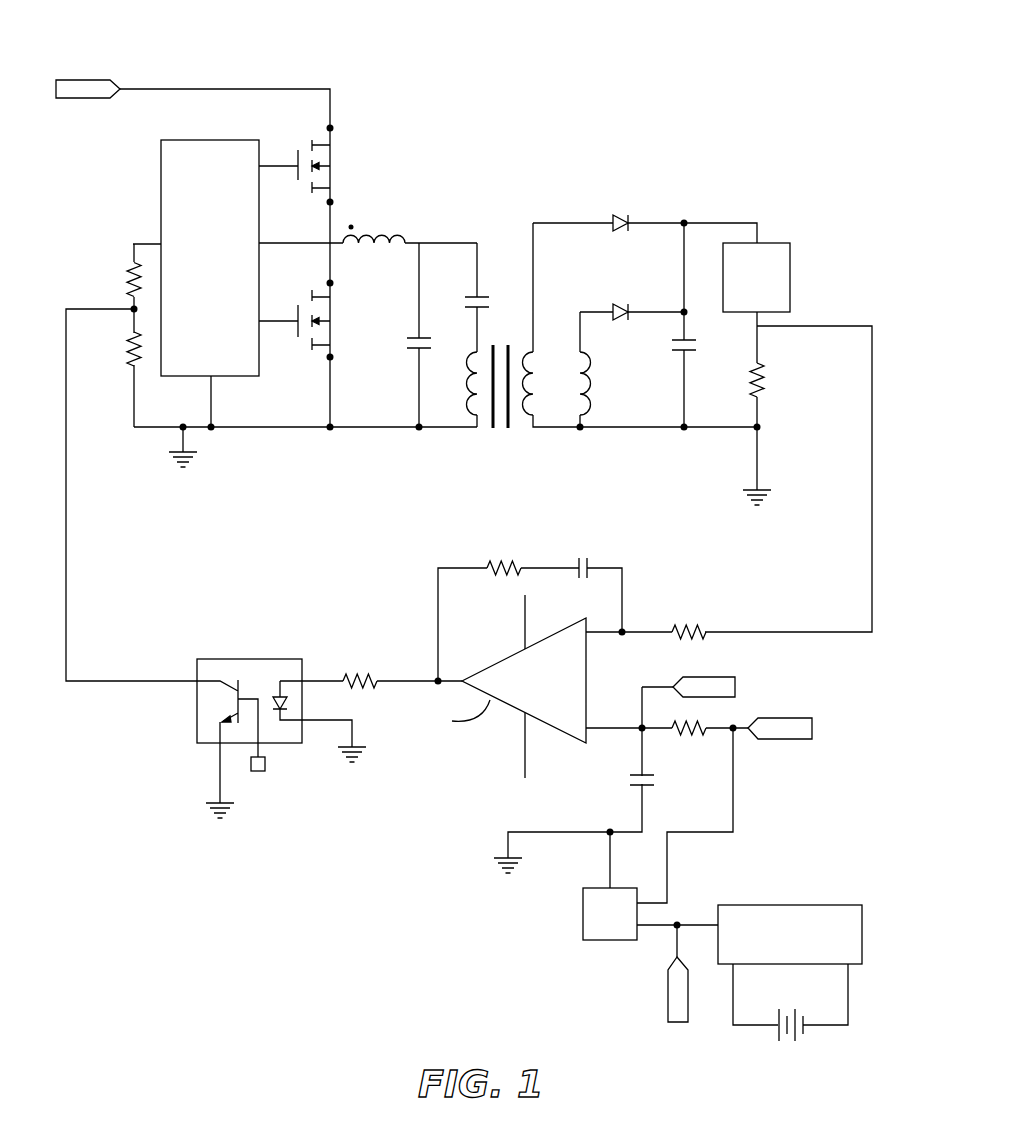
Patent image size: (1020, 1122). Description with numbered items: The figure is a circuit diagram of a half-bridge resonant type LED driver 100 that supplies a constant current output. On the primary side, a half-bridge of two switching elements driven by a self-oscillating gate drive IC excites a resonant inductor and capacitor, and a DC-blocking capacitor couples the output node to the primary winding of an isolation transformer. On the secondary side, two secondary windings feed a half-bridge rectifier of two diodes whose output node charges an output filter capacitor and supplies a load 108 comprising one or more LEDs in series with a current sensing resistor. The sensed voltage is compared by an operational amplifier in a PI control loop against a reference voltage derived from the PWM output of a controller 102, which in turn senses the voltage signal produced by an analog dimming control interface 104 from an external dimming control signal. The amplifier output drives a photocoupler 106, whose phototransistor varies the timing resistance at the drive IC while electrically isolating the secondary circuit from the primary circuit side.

The LED driver 100 is at (464, 561).
The controller 102 is at (598, 929).
The analog dimming control interface 104 is at (778, 945).
The photocoupler 106 is at (232, 659).
The load 108 is at (745, 291).